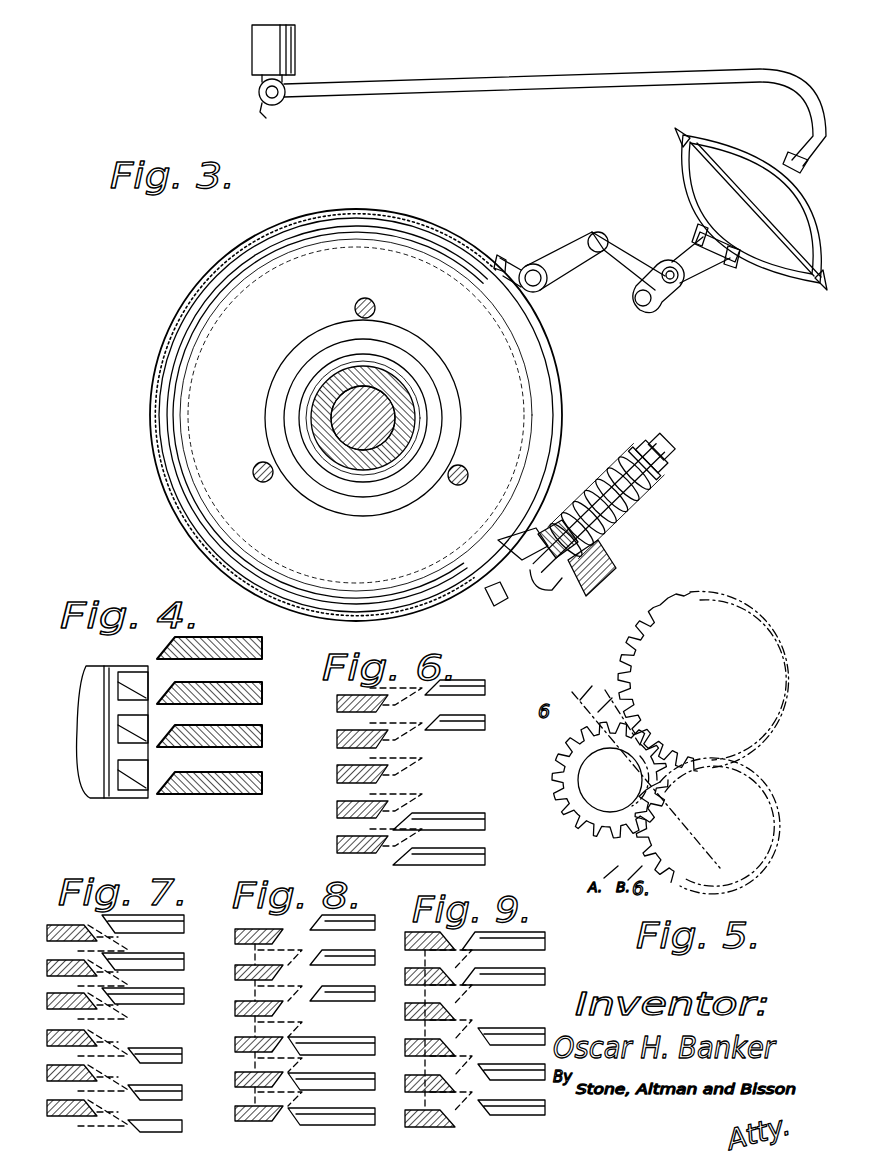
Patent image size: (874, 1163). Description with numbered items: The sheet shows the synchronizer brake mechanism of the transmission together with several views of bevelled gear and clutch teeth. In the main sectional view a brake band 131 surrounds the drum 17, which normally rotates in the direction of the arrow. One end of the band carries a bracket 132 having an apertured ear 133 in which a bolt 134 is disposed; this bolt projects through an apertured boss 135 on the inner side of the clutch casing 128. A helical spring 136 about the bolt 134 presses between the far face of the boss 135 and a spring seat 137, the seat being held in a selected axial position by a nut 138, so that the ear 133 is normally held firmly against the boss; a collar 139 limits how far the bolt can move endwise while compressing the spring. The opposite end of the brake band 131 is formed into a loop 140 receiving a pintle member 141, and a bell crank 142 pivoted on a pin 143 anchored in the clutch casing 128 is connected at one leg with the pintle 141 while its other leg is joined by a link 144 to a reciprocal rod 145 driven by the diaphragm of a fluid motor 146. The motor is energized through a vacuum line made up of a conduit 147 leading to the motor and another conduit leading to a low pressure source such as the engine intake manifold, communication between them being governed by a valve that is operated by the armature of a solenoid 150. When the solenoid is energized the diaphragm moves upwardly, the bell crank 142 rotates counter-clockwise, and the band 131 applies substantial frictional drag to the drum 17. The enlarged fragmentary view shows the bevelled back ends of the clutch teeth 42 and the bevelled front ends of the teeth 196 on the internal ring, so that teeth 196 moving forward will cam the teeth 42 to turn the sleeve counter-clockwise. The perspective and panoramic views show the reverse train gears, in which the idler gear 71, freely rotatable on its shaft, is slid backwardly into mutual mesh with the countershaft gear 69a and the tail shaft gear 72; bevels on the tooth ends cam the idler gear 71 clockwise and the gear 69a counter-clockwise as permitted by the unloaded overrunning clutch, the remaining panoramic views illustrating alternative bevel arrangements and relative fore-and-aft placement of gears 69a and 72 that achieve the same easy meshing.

In FIG. 3, the drum 17 is at (187, 417).
In FIG. 4, the clutch teeth 42 is at (126, 782).
In FIG. 6, the countershaft gear 69a is at (472, 840).
In FIG. 5, the countershaft gear 69a is at (724, 812).
In FIG. 7, the countershaft gear 69a is at (192, 1040).
In FIG. 8, the countershaft gear 69a is at (348, 1044).
In FIG. 9, the countershaft gear 69a is at (528, 1028).
In FIG. 6, the idler gear 71 is at (340, 766).
In FIG. 5, the idler gear 71 is at (560, 805).
In FIG. 7, the idler gear 71 is at (100, 1032).
In FIG. 8, the idler gear 71 is at (245, 985).
In FIG. 9, the idler gear 71 is at (418, 932).
In FIG. 6, the tail shaft gear 72 is at (460, 682).
In FIG. 5, the tail shaft gear 72 is at (750, 640).
In FIG. 7, the tail shaft gear 72 is at (176, 940).
In FIG. 8, the tail shaft gear 72 is at (370, 992).
In FIG. 9, the tail shaft gear 72 is at (542, 962).
In FIG. 3, the clutch casing 128 is at (600, 578).
In FIG. 3, the brake band 131 is at (228, 268).
In FIG. 3, the bracket 132 is at (500, 590).
In FIG. 3, the apertured ear 133 is at (556, 598).
In FIG. 3, the bolt 134 is at (606, 478).
In FIG. 3, the apertured boss 135 is at (545, 535).
In FIG. 3, the helical spring 136 is at (628, 516).
In FIG. 3, the spring seat 137 is at (662, 488).
In FIG. 3, the nut 138 is at (664, 470).
In FIG. 3, the collar 139 is at (612, 542).
In FIG. 3, the loop 140 is at (548, 290).
In FIG. 3, the pintle member 141 is at (514, 262).
In FIG. 3, the bell crank 142 is at (561, 258).
In FIG. 3, the pin 143 is at (604, 235).
In FIG. 3, the link 144 is at (654, 314).
In FIG. 3, the reciprocal rod 145 is at (712, 262).
In FIG. 3, the fluid motor 146 is at (692, 170).
In FIG. 3, the conduit 147 is at (514, 78).
In FIG. 3, the solenoid 150 is at (296, 48).
In FIG. 4, the teeth 196 is at (236, 738).